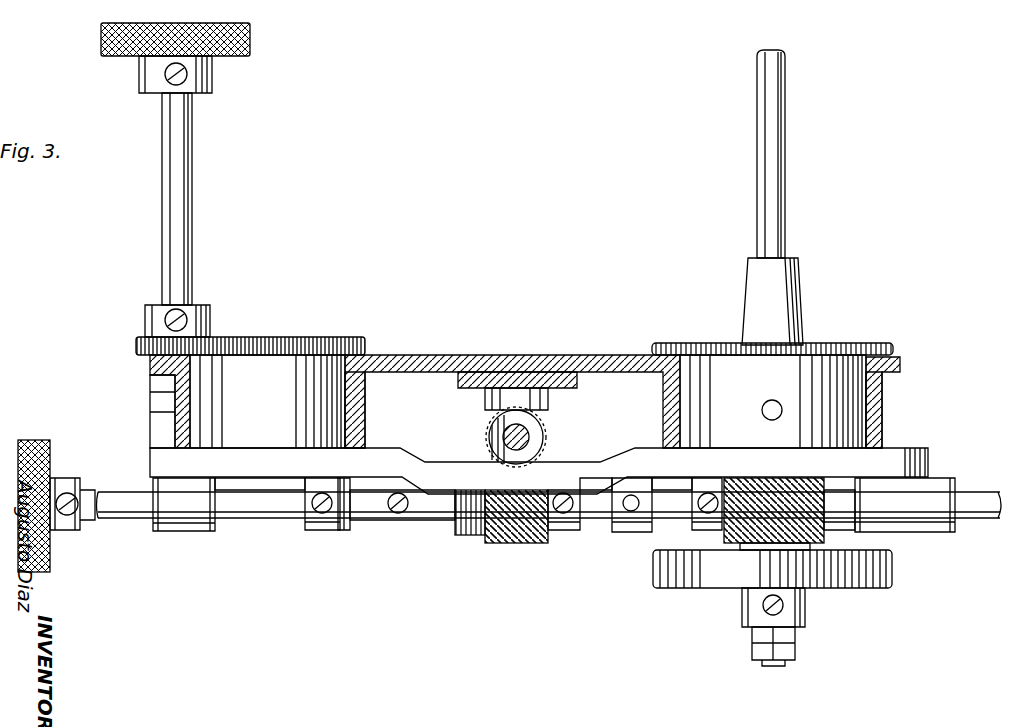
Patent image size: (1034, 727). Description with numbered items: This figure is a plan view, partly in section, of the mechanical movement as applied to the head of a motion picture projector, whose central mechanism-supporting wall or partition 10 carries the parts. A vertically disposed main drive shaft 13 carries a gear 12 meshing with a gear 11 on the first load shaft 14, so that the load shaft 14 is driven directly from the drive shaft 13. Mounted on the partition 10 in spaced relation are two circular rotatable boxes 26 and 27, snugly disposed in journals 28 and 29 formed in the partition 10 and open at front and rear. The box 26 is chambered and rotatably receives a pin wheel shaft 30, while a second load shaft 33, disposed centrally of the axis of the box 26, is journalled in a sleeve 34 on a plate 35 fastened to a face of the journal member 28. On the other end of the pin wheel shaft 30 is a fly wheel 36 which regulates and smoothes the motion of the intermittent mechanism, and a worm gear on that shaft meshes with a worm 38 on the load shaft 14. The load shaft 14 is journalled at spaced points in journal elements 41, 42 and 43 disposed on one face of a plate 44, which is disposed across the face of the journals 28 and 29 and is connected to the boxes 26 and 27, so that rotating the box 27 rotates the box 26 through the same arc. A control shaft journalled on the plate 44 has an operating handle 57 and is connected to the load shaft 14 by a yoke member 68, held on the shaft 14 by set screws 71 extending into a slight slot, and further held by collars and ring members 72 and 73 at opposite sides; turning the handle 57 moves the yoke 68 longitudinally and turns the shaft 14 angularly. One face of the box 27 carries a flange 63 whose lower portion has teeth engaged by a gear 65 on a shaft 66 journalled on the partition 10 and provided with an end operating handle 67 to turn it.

The mechanism-supporting wall or partition 10 is at (458, 366).
The gear 11 is at (522, 545).
The gear 12 is at (548, 442).
The main drive shaft 13 is at (528, 432).
The load shaft 14 is at (596, 522).
The box 26 is at (773, 401).
The box 27 is at (267, 401).
The journal 28 is at (883, 407).
The journal 29 is at (366, 416).
The pin wheel shaft 30 is at (772, 666).
The shaft 33 is at (768, 194).
The sleeve 34 is at (752, 295).
The plate 35 is at (828, 345).
The fly wheel 36 is at (852, 590).
The worm 38 is at (830, 532).
The journal element 41 is at (178, 531).
The journal element 42 is at (632, 534).
The journal element 43 is at (930, 488).
The plate 44 is at (539, 471).
The operating handle 57 is at (52, 462).
The flange 63 is at (366, 347).
The gear 65 is at (140, 348).
The shaft 66 is at (186, 180).
The operating handle 67 is at (244, 62).
The yoke member 68 is at (366, 522).
The set screw 71 is at (318, 532).
The ring member 72 is at (344, 532).
The ring member 73 is at (462, 537).